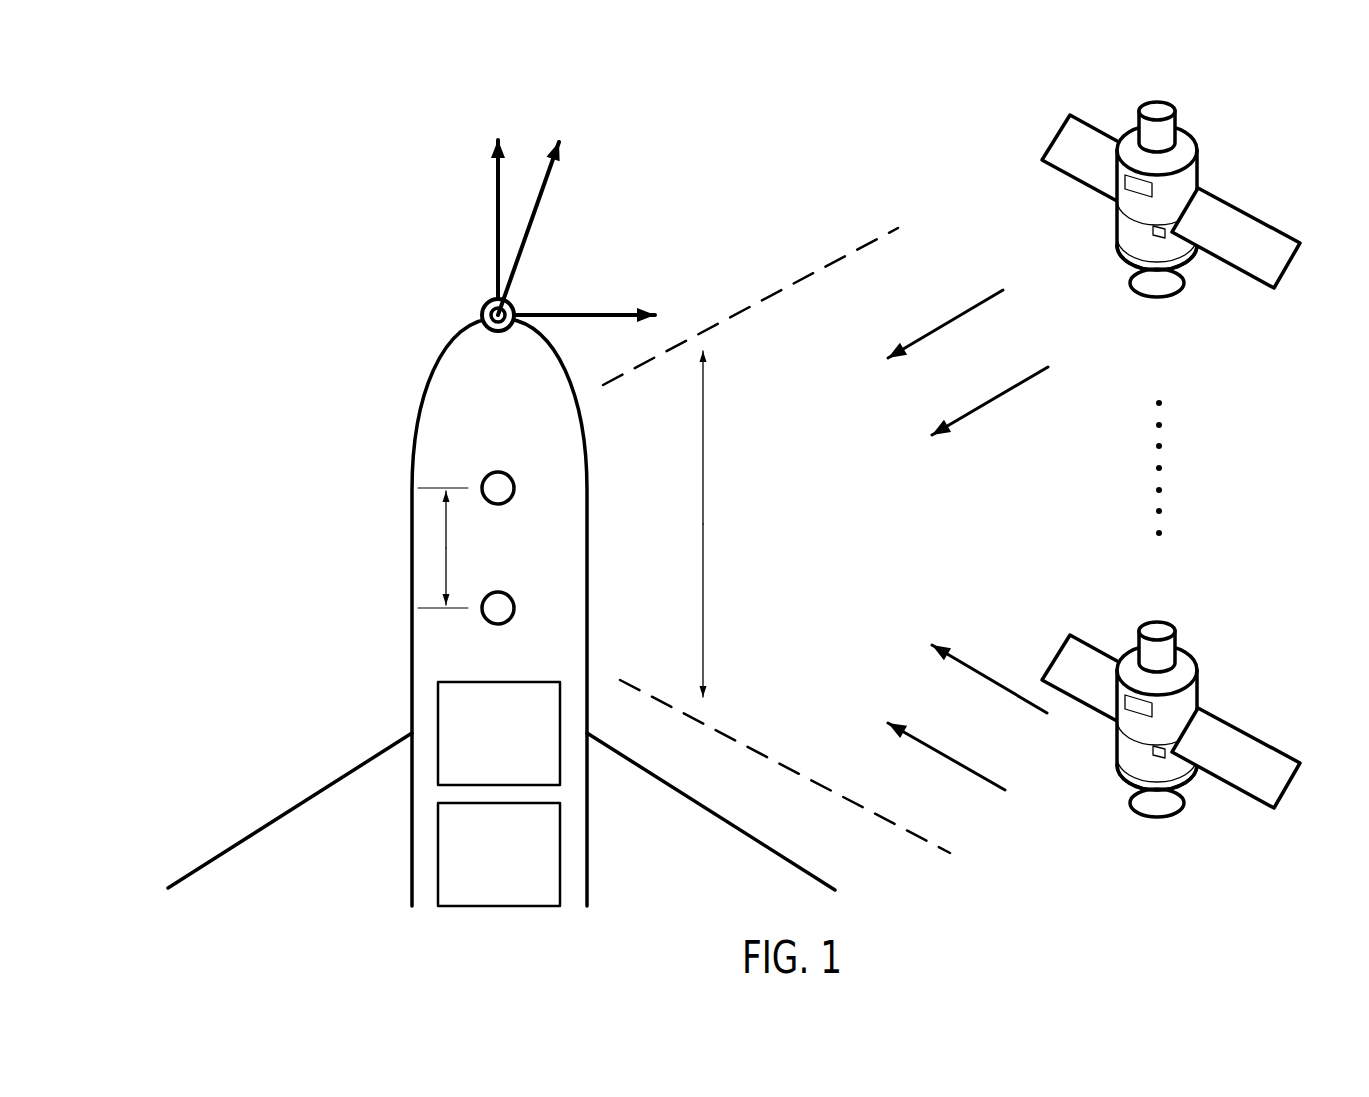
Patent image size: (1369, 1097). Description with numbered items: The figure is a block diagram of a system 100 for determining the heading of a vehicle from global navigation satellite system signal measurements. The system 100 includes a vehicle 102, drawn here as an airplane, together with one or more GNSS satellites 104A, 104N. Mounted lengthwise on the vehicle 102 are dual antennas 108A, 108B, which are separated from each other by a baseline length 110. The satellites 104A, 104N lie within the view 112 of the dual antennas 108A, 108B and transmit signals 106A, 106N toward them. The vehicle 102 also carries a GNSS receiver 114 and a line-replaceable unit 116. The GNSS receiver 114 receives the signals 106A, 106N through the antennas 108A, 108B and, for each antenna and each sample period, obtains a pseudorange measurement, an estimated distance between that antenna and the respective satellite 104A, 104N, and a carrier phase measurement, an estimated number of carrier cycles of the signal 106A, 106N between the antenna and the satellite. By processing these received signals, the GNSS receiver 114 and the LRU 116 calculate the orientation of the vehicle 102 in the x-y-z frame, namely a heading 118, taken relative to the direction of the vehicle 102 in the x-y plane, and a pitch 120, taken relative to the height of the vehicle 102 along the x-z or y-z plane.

The system 100 is at (795, 83).
The vehicle 102 is at (424, 394).
The satellite 104A is at (1184, 122).
The satellite 104N is at (1184, 642).
The signals 106A is at (968, 362).
The signals 106N is at (967, 717).
The antenna 108A is at (492, 478).
The antenna 108B is at (495, 626).
The baseline length 110 is at (443, 548).
The view 112 is at (776, 540).
The GNSS receiver 114 is at (499, 733).
The line-replaceable unit (LRU) 116 is at (499, 854).
The heading 118 is at (536, 213).
The pitch 120 is at (484, 299).